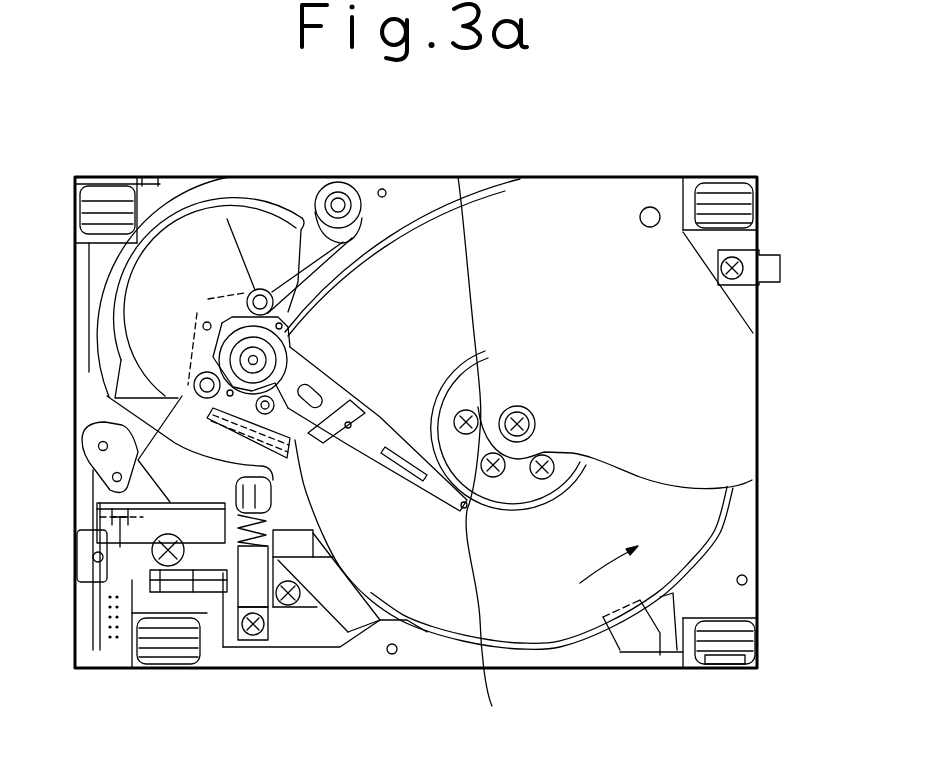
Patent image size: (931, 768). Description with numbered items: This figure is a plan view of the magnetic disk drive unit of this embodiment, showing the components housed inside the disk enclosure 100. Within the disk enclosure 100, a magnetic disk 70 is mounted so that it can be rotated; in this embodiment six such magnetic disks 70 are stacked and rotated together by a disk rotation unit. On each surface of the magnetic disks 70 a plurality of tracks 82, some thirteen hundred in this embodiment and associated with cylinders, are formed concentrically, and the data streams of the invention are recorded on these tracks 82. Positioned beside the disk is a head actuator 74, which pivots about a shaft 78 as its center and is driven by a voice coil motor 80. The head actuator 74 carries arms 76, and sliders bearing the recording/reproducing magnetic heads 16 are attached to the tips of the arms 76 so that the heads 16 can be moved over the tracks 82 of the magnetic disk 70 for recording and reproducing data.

The disk enclosure 100 is at (632, 158).
The magnetic disk 70 is at (557, 640).
The tracks 82 is at (635, 500).
The recording/reproducing magnetic head 16 is at (485, 457).
The voice coil motor 80 is at (158, 257).
The shaft 78 is at (235, 361).
The head actuator 74 is at (310, 320).
The arm 76 is at (403, 473).